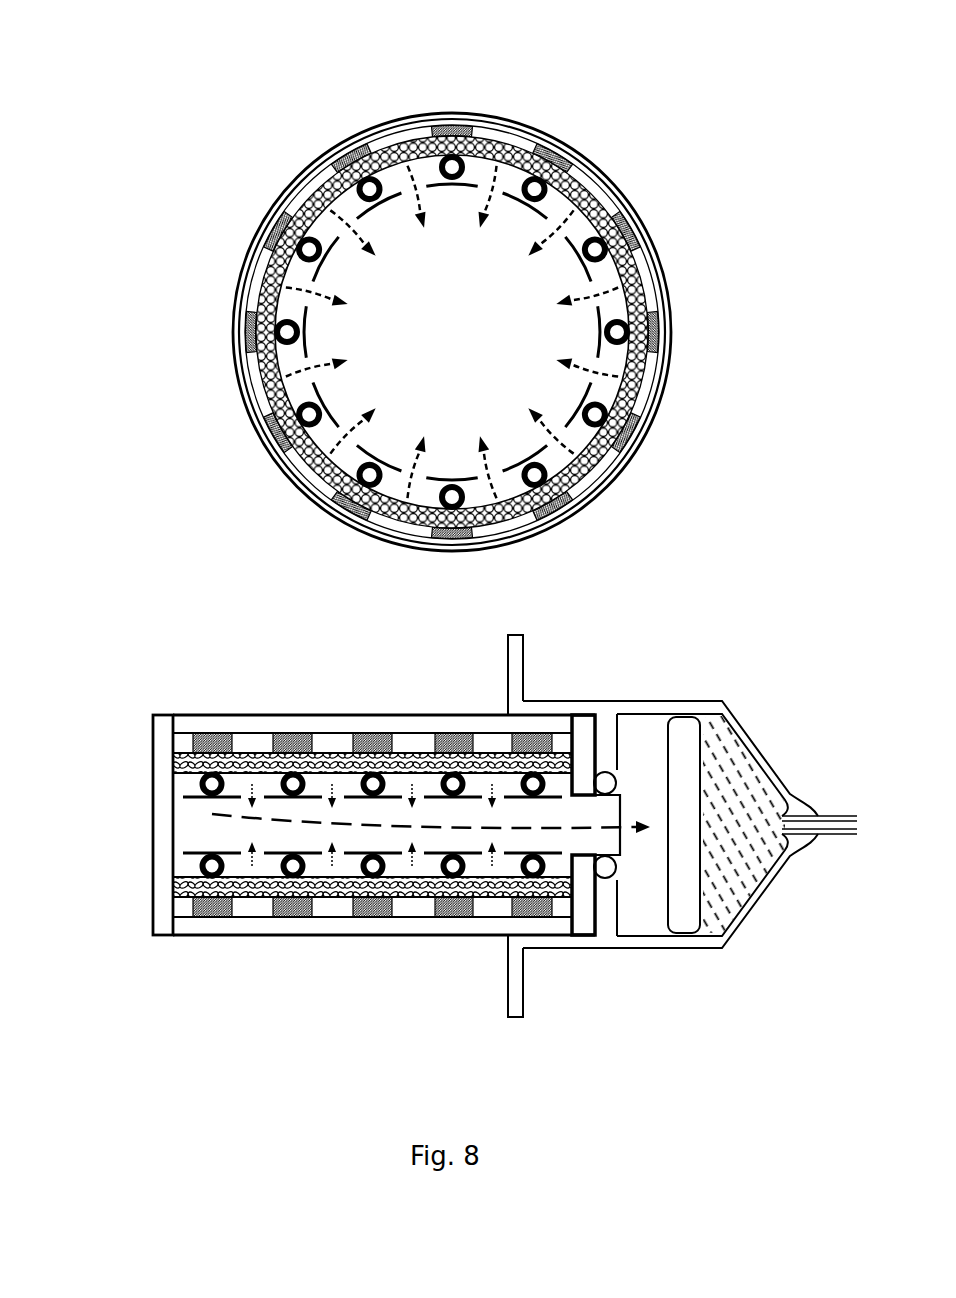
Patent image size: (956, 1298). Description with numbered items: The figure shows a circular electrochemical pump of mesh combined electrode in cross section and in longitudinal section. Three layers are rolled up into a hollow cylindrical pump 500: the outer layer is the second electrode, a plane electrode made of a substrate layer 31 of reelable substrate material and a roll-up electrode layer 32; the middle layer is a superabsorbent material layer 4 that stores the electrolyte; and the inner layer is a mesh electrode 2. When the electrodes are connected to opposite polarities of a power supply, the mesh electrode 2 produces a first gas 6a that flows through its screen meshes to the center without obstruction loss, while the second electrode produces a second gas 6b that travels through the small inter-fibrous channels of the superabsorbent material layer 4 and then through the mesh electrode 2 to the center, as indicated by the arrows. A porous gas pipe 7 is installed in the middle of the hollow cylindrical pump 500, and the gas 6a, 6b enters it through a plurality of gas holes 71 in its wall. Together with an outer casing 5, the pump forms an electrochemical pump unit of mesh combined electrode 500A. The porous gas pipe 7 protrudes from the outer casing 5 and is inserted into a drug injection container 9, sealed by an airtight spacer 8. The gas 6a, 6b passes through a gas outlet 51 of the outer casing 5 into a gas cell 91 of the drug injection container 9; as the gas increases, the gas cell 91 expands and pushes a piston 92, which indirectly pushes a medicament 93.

The hollow cylindrical pump 500 is at (528, 44).
The electrochemical pump unit of mesh combined electrode 500A is at (385, 645).
The mesh electrode 2 is at (648, 380).
The superabsorbent material layer 4 is at (667, 297).
The outer casing 5 is at (153, 750).
The gas outlet 51 is at (621, 800).
The first gas 6a is at (660, 952).
The second gas 6b is at (382, 599).
The porous gas pipe 7 is at (263, 407).
The gas holes 71 is at (247, 360).
The airtight spacer 8 is at (603, 880).
The drug injection container 9 is at (687, 702).
The gas cell 91 is at (637, 885).
The piston 92 is at (700, 935).
The medicament 93 is at (723, 730).
The substrate layer 31 is at (610, 187).
The roll-up electrode layer 32 is at (642, 224).